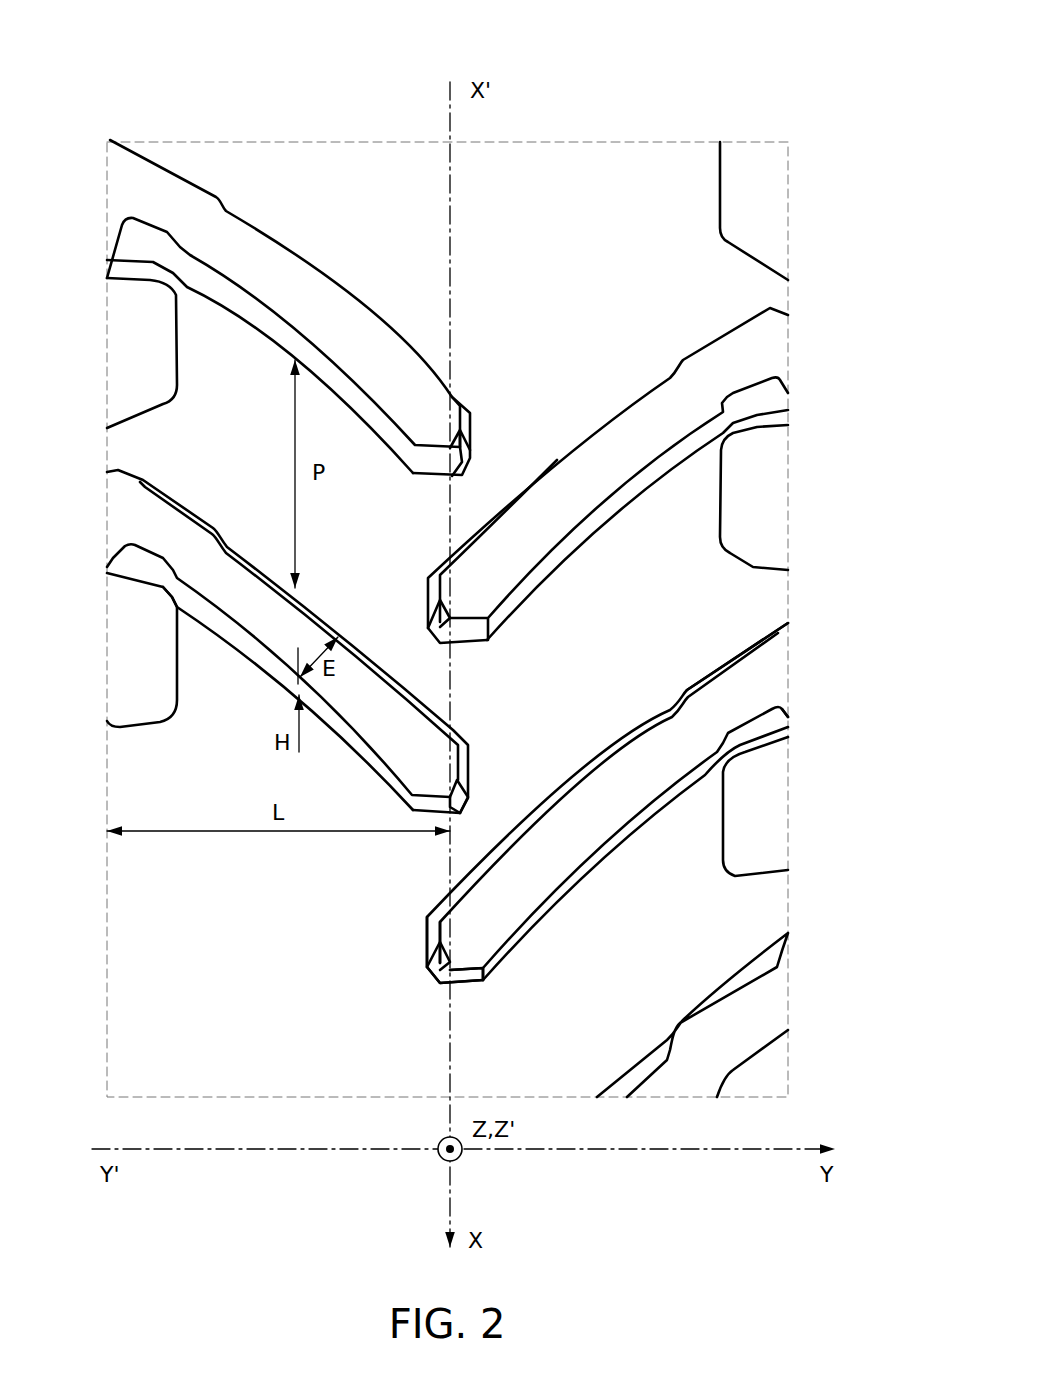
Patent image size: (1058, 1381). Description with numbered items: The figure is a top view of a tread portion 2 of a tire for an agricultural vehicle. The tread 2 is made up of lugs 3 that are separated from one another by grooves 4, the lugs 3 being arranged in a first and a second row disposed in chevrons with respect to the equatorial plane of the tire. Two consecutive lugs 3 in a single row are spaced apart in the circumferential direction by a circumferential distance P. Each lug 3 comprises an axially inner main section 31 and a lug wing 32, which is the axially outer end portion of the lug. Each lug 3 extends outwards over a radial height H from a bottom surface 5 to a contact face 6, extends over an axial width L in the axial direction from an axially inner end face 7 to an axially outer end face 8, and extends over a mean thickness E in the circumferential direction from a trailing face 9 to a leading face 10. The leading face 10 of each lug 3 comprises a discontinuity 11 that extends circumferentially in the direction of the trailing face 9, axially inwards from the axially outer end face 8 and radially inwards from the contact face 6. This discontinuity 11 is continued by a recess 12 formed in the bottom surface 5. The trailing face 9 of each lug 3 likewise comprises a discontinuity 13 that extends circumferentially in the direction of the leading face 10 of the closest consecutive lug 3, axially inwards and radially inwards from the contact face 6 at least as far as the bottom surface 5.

The tread portion 2 is at (198, 128).
The lug 3 is at (254, 649).
The axially inner main section 31 is at (397, 732).
The lug wing 32 is at (207, 563).
The groove 4 is at (207, 422).
The bottom surface 5 is at (625, 843).
The contact face 6 is at (570, 850).
The axially inner end face 7 is at (430, 983).
The axially outer end face 8 is at (790, 673).
The trailing face 9 is at (508, 843).
The leading face 10 is at (513, 938).
The discontinuity 11 is at (745, 405).
The recess 12 is at (767, 540).
The discontinuity 13 is at (655, 445).